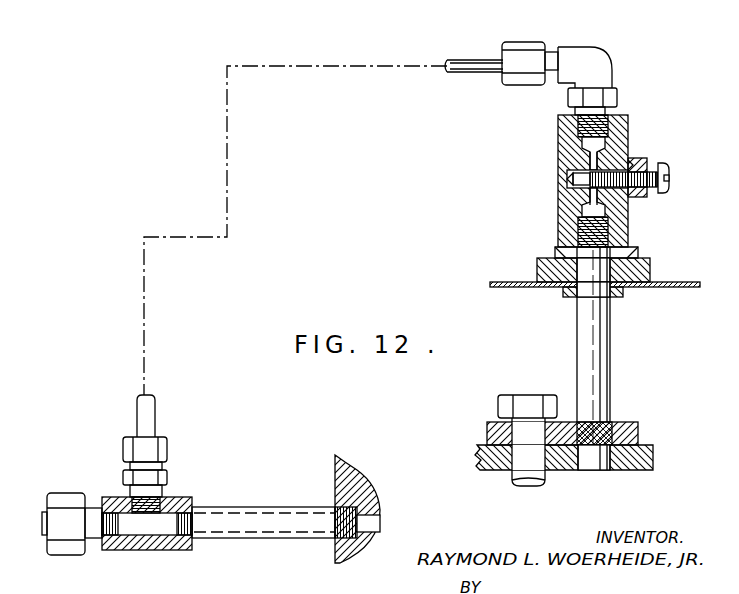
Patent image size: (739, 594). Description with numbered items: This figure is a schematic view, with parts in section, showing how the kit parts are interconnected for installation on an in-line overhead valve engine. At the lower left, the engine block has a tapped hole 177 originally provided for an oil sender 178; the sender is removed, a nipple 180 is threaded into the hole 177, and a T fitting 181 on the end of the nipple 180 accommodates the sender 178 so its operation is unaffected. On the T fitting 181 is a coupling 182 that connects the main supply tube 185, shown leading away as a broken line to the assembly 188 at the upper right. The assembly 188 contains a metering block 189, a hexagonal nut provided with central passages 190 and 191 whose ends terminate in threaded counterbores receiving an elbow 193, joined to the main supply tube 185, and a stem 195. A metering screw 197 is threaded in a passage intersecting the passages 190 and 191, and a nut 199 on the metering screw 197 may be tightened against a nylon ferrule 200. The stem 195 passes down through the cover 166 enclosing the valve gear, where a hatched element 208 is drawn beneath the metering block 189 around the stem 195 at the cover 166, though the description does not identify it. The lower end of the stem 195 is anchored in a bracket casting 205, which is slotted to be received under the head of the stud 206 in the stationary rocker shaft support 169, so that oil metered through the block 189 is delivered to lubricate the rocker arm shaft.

The cover 166 is at (668, 282).
The stationary rocker shaft support 169 is at (650, 449).
The tapped hole 177 is at (343, 505).
The oil sender 178 is at (68, 493).
The nipple 180 is at (231, 539).
The T fitting 181 is at (131, 550).
The coupling 182 is at (168, 452).
The main supply tube 185 is at (474, 59).
The assembly 188 is at (630, 91).
The metering block 189 is at (558, 128).
The central passage 190 is at (588, 162).
The central passage 191 is at (588, 196).
The elbow 193 is at (581, 47).
The stem 195 is at (612, 366).
The metering screw 197 is at (669, 167).
The nut 199 is at (641, 163).
The nylon ferrule 200 is at (629, 160).
The bracket casting 205 is at (487, 434).
The stud 206 is at (537, 394).
The nut 208 is at (537, 270).